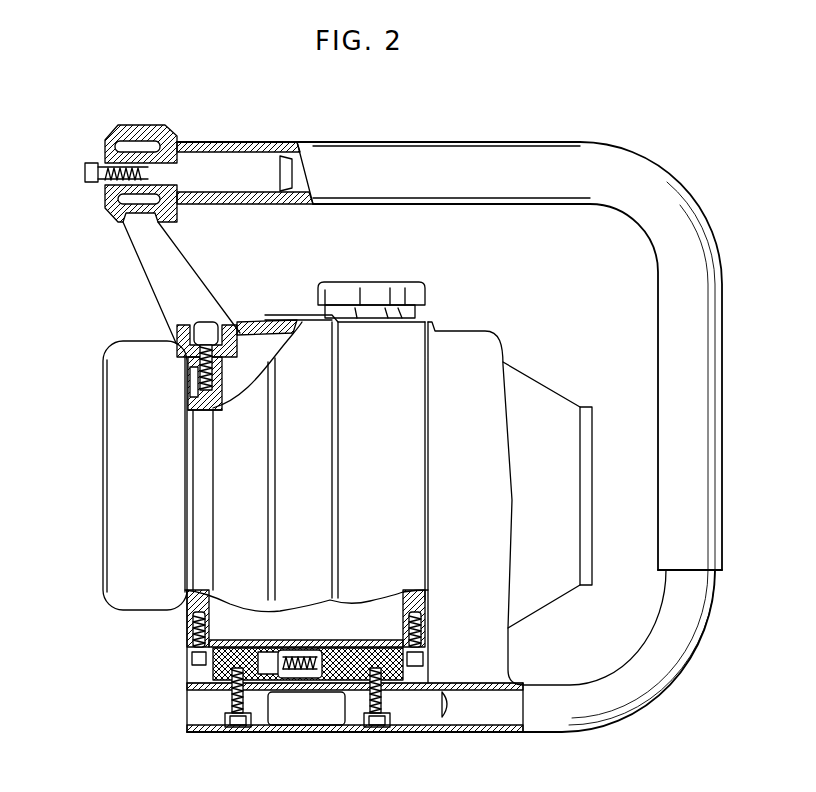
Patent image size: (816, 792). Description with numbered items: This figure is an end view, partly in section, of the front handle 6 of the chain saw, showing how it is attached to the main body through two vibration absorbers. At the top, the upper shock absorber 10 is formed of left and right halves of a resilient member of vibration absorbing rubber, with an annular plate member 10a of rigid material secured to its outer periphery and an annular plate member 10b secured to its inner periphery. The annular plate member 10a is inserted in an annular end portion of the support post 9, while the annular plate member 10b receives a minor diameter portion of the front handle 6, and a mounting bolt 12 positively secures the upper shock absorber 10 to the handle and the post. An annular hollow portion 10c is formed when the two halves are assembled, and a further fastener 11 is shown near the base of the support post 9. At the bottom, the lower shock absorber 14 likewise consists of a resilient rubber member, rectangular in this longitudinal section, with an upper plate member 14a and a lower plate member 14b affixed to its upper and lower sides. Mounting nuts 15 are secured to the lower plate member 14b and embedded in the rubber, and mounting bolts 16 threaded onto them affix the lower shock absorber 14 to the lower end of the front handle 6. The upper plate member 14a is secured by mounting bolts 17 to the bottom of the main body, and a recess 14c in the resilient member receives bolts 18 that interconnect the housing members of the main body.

The front handle 6 is at (438, 187).
The support post 9 is at (192, 275).
The upper shock absorber 10 is at (131, 173).
The annular plate member 10a is at (113, 130).
The annular plate member 10b is at (106, 152).
The annular hollow portion 10c is at (119, 217).
The mounting bolt 11 is at (200, 323).
The mounting bolt 12 is at (92, 183).
The lower shock absorber 14 is at (320, 679).
The upper plate member 14a is at (189, 639).
The lower plate member 14b is at (196, 690).
The recess 14c is at (257, 642).
The mounting nuts 15 is at (384, 690).
The mounting bolts 16 is at (245, 728).
The mounting bolts 17 is at (197, 660).
The bolts 18 is at (303, 657).